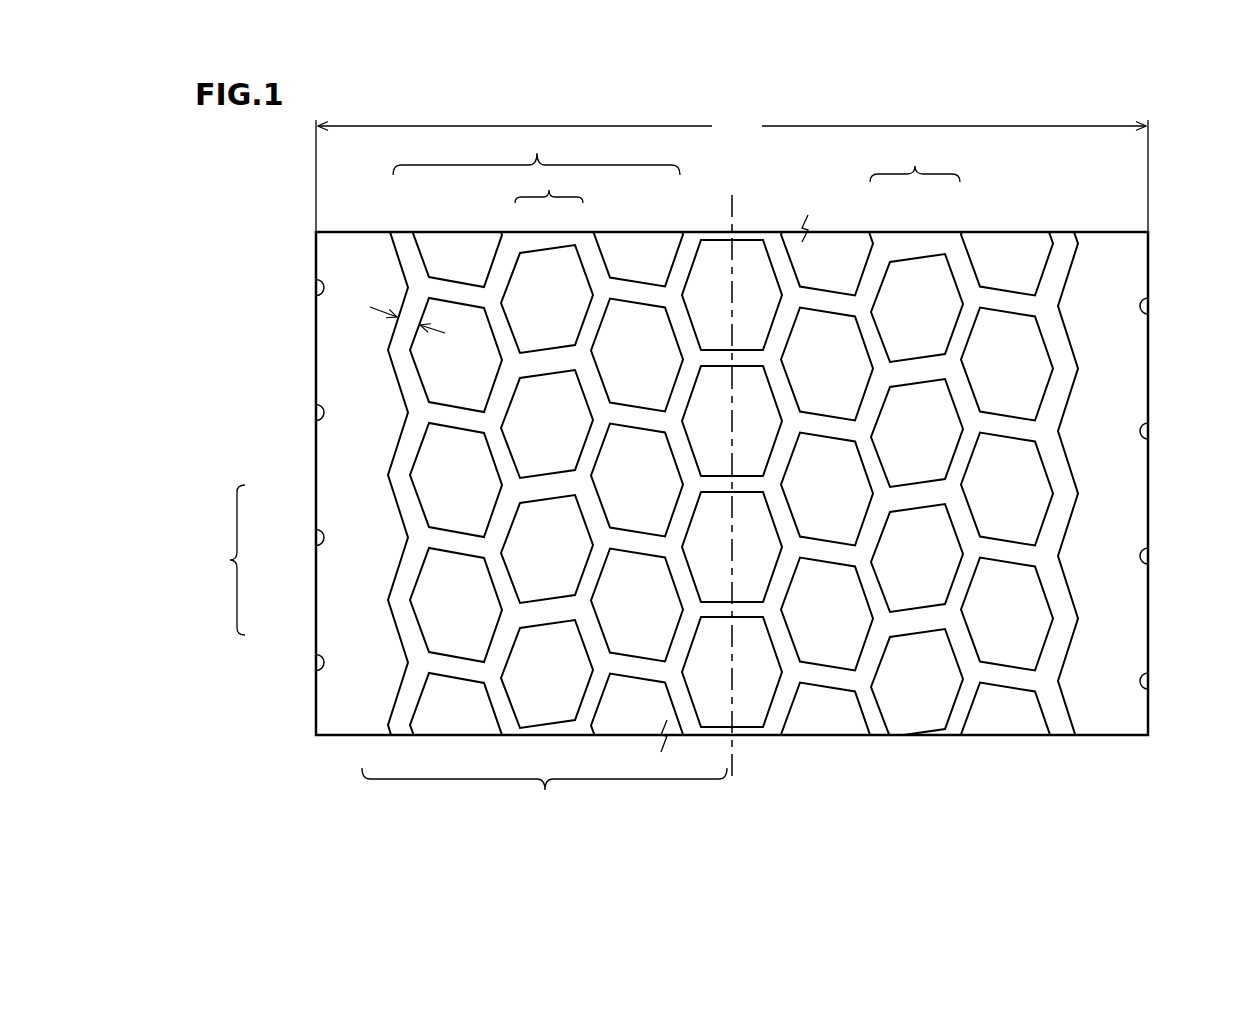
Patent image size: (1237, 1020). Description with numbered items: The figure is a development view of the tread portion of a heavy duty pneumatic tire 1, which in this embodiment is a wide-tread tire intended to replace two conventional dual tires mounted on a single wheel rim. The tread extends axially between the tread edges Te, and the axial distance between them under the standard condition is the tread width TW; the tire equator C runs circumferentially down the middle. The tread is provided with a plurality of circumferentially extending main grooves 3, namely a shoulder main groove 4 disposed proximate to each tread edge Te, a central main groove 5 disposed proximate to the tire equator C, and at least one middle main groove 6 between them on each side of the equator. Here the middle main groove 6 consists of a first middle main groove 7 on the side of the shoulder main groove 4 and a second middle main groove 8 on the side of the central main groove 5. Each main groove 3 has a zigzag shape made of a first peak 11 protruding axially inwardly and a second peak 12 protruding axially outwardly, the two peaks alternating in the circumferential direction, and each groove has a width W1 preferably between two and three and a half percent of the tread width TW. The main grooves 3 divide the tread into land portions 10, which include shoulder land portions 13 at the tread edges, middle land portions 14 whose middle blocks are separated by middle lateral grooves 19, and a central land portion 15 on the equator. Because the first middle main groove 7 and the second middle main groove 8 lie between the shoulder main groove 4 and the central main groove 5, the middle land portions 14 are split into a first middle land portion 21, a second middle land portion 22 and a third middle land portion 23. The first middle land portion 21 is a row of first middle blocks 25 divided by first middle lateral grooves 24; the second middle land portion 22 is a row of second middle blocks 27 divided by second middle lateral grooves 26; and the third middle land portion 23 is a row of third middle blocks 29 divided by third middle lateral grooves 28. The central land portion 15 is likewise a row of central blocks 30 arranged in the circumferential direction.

The heavy duty pneumatic tire 1 is at (985, 207).
The main grooves 3 is at (536, 153).
The shoulder main groove 4 is at (409, 258).
The central main groove 5 is at (683, 258).
The middle main groove 6 is at (737, 170).
The first middle main groove 7 is at (500, 258).
The second middle main groove 8 is at (597, 258).
The land portions 10 is at (544, 793).
The first peak 11 is at (428, 410).
The second peak 12 is at (397, 473).
The shoulder land portions 13 is at (732, 488).
The middle land portions 14 is at (546, 480).
The central land portion 15 is at (732, 483).
The middle lateral grooves 19 is at (221, 560).
The first middle land portion 21 is at (1007, 489).
The second middle land portion 22 is at (917, 495).
The third middle land portion 23 is at (827, 489).
The first middle lateral grooves 24 is at (455, 543).
The first middle blocks 25 is at (1020, 350).
The second middle lateral grooves 26 is at (547, 481).
The second middle blocks 27 is at (925, 415).
The third middle lateral grooves 28 is at (638, 542).
The third middle blocks 29 is at (835, 488).
The central blocks 30 is at (755, 548).
The tread width TW is at (732, 173).
The tread edge Te is at (316, 233).
The tire equator C is at (731, 475).
The width of main groove W1 is at (408, 321).